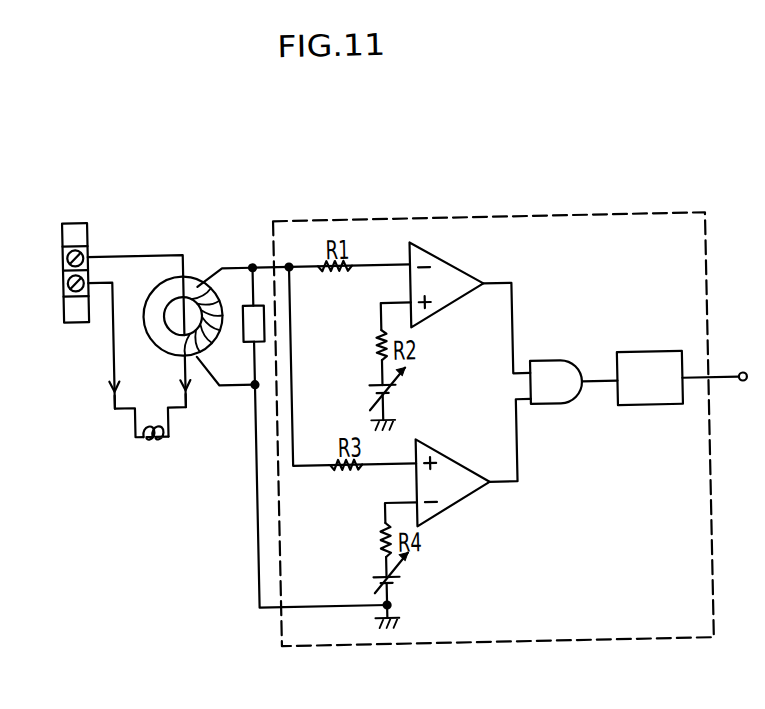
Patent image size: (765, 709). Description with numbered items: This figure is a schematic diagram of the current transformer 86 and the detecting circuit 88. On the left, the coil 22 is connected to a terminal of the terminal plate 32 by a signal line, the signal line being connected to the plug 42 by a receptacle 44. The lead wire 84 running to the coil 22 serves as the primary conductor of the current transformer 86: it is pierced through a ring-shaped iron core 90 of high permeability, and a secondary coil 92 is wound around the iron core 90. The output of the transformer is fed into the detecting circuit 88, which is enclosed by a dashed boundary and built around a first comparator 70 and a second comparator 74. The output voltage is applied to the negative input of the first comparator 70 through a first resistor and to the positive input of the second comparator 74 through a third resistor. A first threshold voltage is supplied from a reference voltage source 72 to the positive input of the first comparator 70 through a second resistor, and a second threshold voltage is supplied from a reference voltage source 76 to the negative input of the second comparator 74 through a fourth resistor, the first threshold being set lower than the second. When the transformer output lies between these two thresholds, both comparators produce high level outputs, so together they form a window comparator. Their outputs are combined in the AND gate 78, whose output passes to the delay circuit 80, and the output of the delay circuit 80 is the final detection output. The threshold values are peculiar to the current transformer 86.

The coil 22 is at (142, 436).
The terminal plate 32 is at (75, 219).
The plug 42 is at (108, 381).
The receptacle 44 is at (110, 392).
The first comparator 70 is at (470, 279).
The reference voltage source 72 is at (376, 387).
The second comparator 74 is at (470, 496).
The reference voltage source 76 is at (375, 579).
The AND gate 78 is at (558, 366).
The delay circuit 80 is at (657, 359).
The lead wire 84 is at (152, 253).
The current transformer 86 is at (188, 284).
The detecting circuit 88 is at (468, 221).
The iron core 90 is at (165, 338).
The secondary coil 92 is at (200, 276).